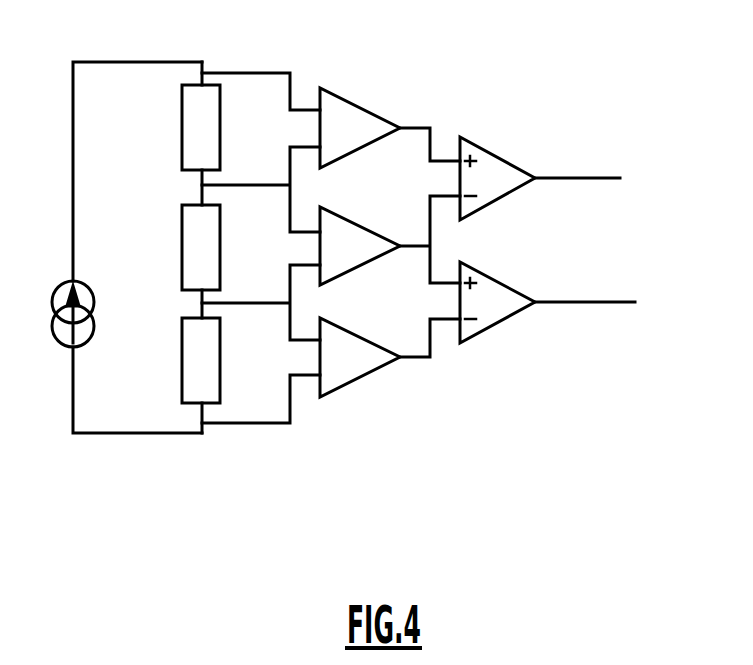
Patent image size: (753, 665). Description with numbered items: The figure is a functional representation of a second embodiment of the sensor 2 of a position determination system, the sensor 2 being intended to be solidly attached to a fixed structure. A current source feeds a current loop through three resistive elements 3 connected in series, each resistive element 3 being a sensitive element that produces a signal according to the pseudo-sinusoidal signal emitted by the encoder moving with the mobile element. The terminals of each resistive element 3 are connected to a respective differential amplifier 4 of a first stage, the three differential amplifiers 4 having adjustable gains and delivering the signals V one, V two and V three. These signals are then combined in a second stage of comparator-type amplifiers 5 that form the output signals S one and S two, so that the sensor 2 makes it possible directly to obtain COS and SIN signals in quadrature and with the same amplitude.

The sensor 2 is at (348, 223).
The resistive element 3 is at (182, 127).
The differential amplifier 4 is at (362, 107).
The comparator 5 is at (492, 152).